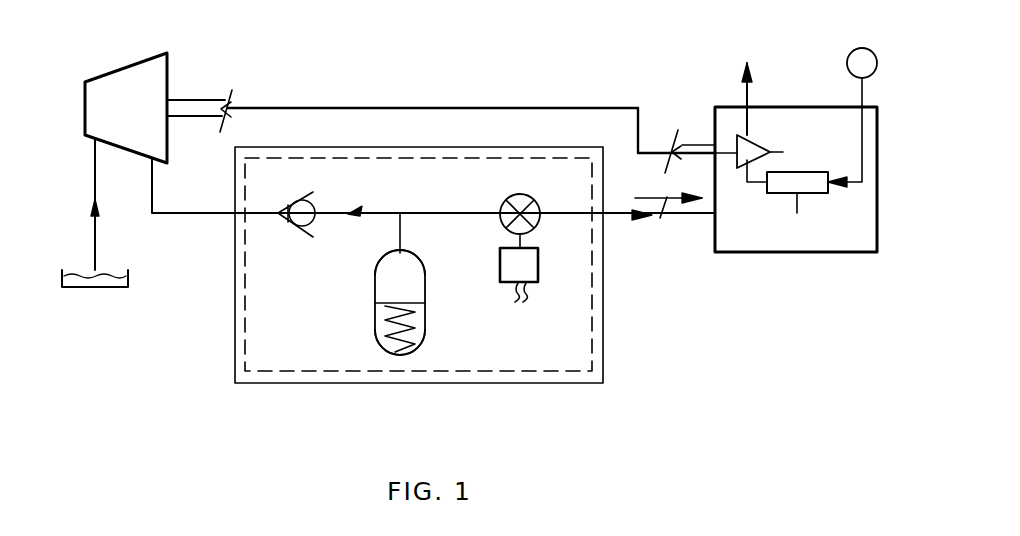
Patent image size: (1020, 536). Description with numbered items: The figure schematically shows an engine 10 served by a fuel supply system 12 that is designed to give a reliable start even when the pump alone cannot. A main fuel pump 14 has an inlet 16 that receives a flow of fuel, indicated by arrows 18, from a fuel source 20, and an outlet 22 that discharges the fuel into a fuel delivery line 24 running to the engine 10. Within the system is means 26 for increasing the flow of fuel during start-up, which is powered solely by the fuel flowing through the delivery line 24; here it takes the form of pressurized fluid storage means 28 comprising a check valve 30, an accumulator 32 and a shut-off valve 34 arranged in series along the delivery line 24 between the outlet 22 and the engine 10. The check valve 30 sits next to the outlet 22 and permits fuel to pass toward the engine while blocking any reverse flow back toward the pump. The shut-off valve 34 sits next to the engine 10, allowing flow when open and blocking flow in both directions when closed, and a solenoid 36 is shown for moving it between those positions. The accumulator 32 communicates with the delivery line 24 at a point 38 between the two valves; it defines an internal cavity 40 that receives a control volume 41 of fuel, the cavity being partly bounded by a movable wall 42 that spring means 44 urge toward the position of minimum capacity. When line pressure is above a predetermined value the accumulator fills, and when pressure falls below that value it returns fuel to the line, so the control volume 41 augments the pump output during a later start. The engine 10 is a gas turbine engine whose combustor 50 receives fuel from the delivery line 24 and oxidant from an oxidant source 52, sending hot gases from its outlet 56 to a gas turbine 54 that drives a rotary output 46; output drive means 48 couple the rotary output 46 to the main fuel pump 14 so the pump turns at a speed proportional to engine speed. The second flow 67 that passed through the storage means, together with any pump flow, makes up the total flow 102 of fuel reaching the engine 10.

The engine 10 is at (860, 240).
The fuel supply system 12 is at (392, 68).
The main fuel pump 14 is at (141, 125).
The inlet 16 is at (95, 153).
The flow of fuel 18 is at (100, 207).
The fuel source 20 is at (72, 289).
The outlet 22 is at (152, 200).
The fuel delivery line 24 is at (795, 193).
The means for increasing the flow of fuel 26 is at (568, 385).
The pressurized fluid storage means 28 is at (604, 336).
The check valve 30 is at (290, 224).
The accumulator 32 is at (425, 290).
The shut-off valve 34 is at (508, 196).
The solenoid 36 is at (538, 263).
The point 38 is at (400, 213).
The internal cavity 40 is at (375, 282).
The control volume 41 is at (414, 292).
The movable wall 42 is at (425, 306).
The spring means 44 is at (383, 350).
The rotary output 46 is at (688, 140).
The output drive means 48 is at (472, 108).
The combustor 50 is at (803, 168).
The oxidant source 52 is at (848, 48).
The gas turbine 54 is at (760, 148).
The outlet of the combustor 56 is at (757, 183).
The second flow 67 is at (632, 220).
The total flow of fuel 102 is at (660, 220).